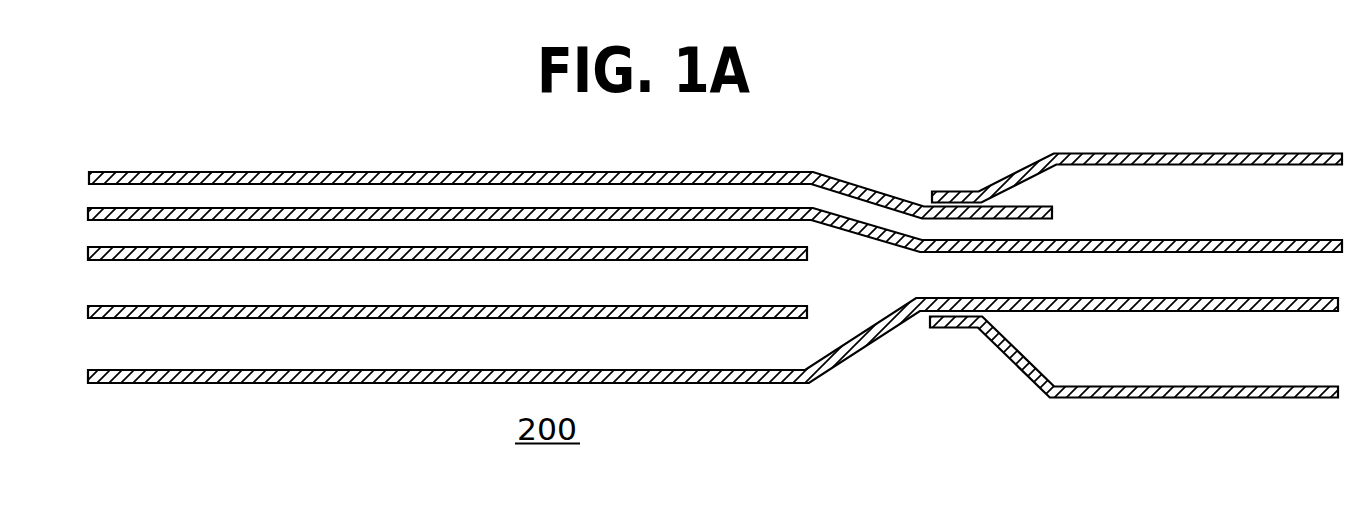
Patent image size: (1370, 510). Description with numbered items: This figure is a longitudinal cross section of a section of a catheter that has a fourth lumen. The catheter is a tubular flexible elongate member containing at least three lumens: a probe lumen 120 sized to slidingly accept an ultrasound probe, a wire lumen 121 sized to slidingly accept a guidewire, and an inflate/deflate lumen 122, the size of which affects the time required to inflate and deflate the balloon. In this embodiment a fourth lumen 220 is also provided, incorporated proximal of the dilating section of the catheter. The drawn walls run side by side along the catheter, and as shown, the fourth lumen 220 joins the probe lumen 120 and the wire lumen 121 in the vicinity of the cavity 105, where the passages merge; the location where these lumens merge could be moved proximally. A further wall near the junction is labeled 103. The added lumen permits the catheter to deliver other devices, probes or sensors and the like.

The inflate/deflate lumen 122 is at (112, 197).
The wire lumen 121 is at (122, 237).
The probe lumen 120 is at (120, 291).
The fourth lumen 220 is at (130, 353).
The cavity 105 is at (880, 189).
The junction wall 103 is at (1075, 238).